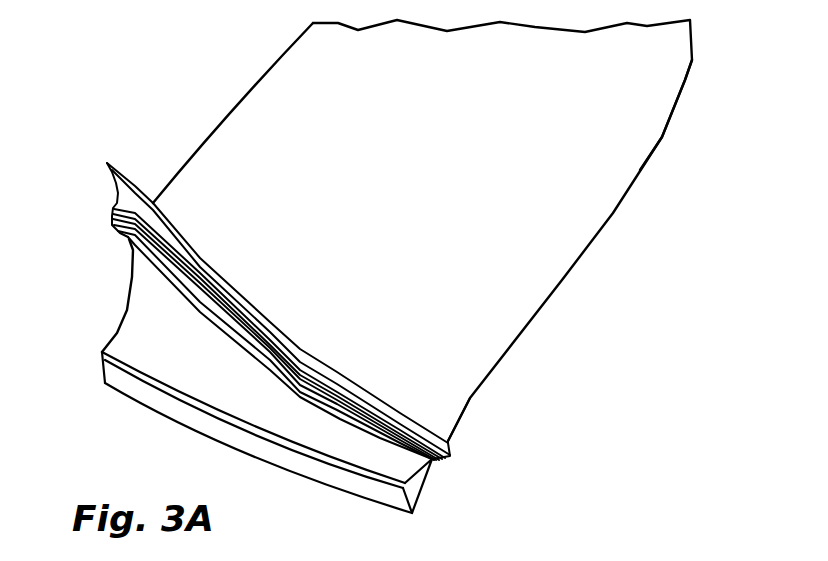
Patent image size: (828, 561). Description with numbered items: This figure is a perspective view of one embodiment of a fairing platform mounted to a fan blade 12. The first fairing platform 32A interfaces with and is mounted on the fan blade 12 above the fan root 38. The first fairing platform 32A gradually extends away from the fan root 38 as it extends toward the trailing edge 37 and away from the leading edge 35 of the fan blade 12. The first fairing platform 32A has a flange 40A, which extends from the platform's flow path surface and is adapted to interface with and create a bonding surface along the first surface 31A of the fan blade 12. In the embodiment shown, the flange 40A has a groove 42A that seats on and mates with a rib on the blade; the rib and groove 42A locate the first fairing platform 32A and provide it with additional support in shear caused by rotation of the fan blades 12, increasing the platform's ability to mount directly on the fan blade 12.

The fan blade 12 is at (418, 230).
The first surface 31A is at (417, 197).
The first fairing platform 32A is at (466, 436).
The leading edge 35 is at (662, 137).
The trailing edge 37 is at (242, 102).
The fan root 38 is at (410, 496).
The flange 40A is at (245, 311).
The groove 42A is at (190, 293).